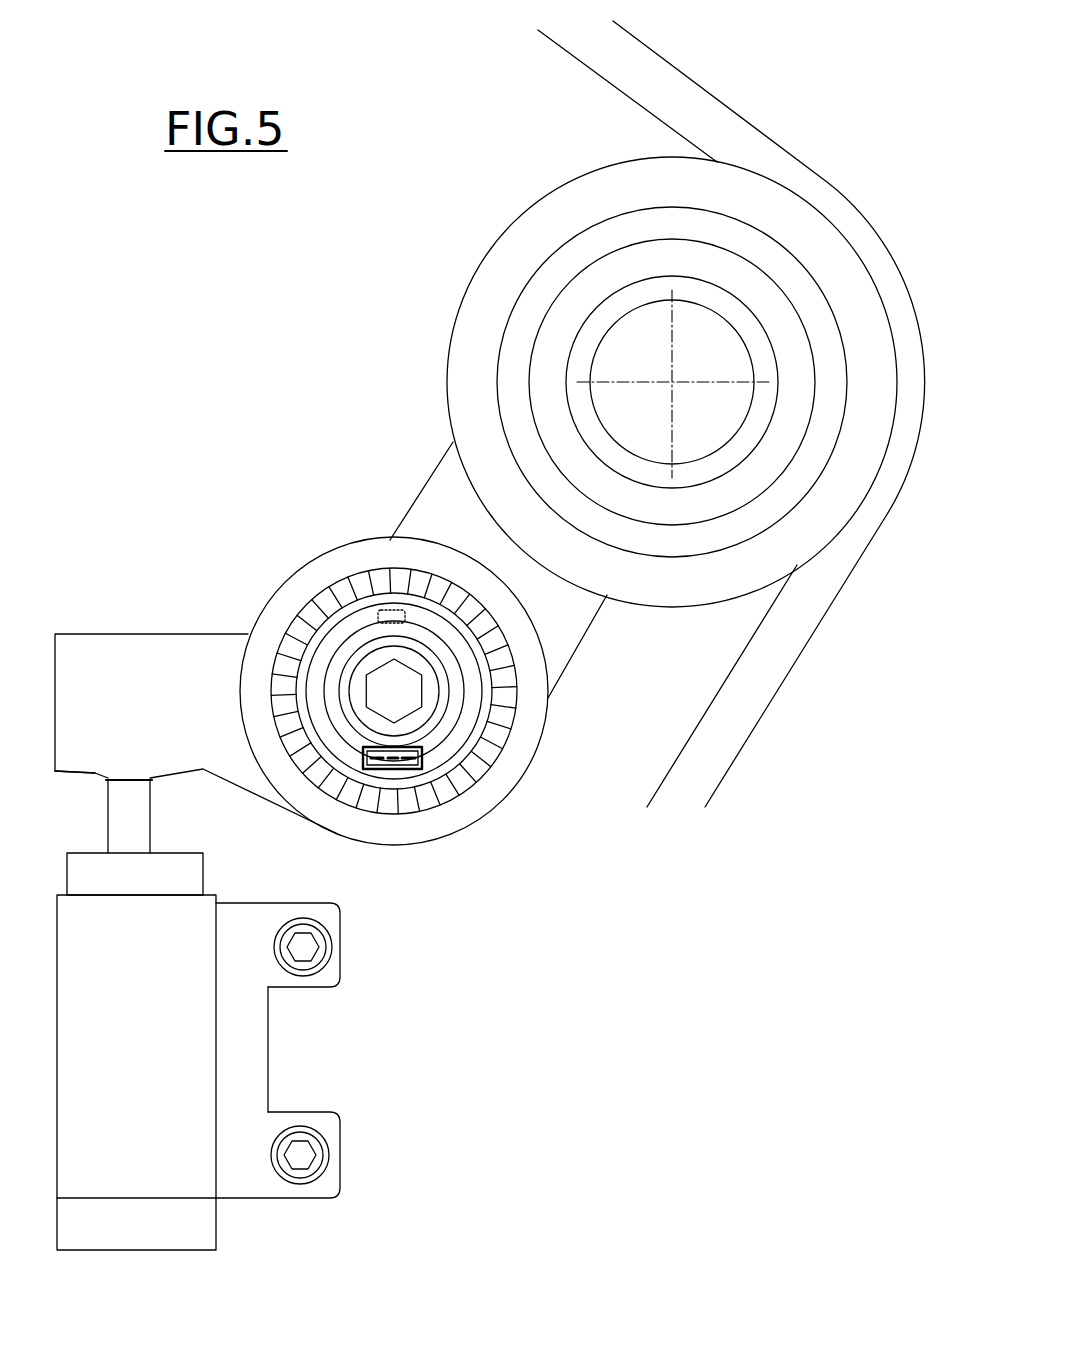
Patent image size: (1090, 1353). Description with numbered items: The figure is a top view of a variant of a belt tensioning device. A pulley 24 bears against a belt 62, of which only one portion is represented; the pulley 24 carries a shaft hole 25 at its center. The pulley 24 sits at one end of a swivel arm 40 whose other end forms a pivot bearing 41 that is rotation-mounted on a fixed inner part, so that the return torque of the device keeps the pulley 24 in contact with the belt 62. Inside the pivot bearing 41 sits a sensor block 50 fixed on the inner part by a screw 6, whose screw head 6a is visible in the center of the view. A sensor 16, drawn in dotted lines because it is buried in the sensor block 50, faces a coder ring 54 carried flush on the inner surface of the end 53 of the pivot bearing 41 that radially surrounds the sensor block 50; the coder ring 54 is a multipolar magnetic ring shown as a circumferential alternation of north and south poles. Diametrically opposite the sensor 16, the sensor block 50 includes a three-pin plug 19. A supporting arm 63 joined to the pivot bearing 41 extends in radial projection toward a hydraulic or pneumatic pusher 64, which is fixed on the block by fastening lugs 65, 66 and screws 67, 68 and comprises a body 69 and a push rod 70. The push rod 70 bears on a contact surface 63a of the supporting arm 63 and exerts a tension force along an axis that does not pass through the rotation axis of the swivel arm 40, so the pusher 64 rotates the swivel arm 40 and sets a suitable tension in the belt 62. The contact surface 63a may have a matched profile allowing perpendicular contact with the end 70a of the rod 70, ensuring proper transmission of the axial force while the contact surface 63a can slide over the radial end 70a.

The screw 6 is at (396, 697).
The screw head 6a is at (427, 692).
The sensor 16 is at (378, 610).
The three-pin plug 19 is at (418, 764).
The pulley 24 is at (669, 337).
The pulley shaft hole 25 is at (722, 302).
The swivel arm 40 is at (417, 634).
The pivot bearing 41 is at (297, 572).
The sensor block 50 is at (467, 693).
The end of pivot bearing 53 is at (285, 612).
The coder ring 54 is at (485, 752).
The belt 62 is at (663, 89).
The supporting arm 63 is at (184, 700).
The contact surface 63a is at (95, 774).
The hydraulic or pneumatic pusher 64 is at (186, 1091).
The fastening lug 65 is at (328, 972).
The fastening lug 66 is at (328, 1182).
The screw 67 is at (313, 938).
The screw 68 is at (312, 1150).
The body 69 is at (294, 1050).
The push rod 70 is at (123, 822).
The end of rod 70a is at (123, 770).